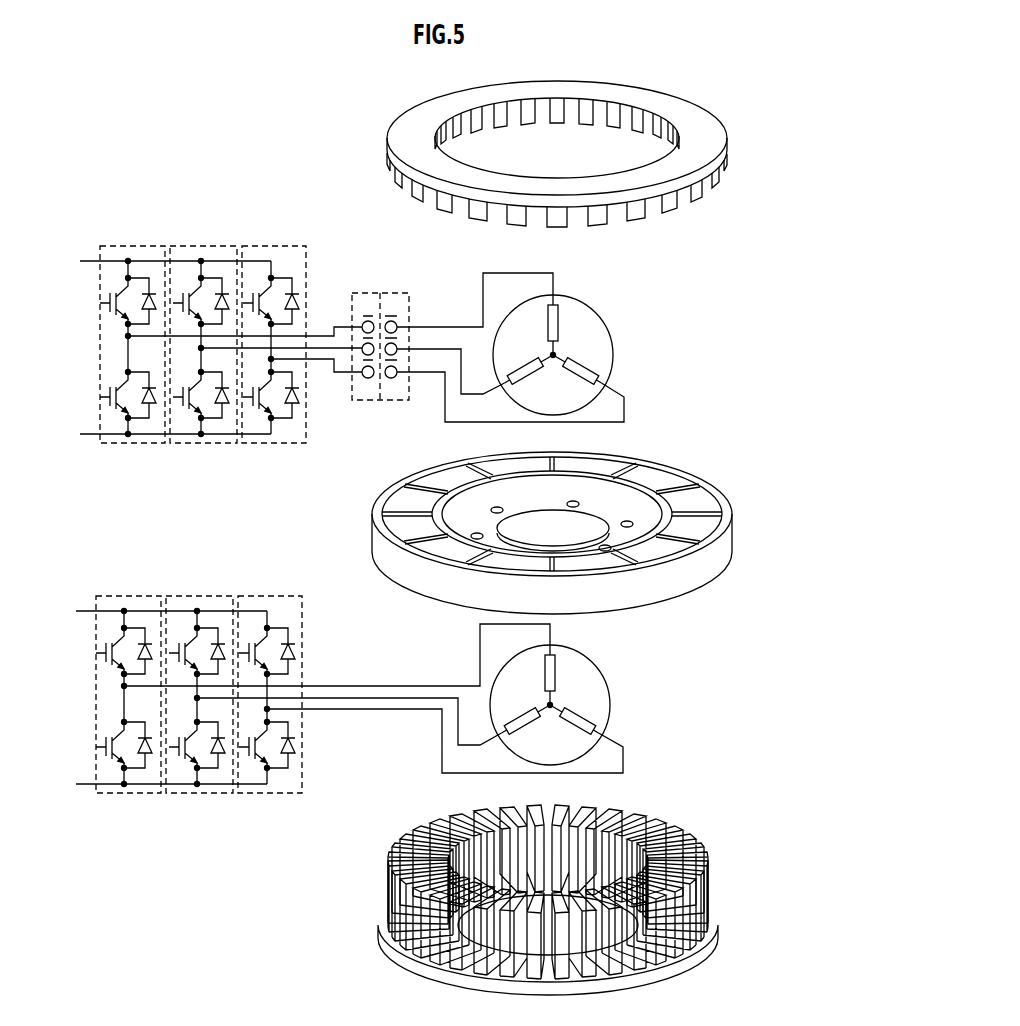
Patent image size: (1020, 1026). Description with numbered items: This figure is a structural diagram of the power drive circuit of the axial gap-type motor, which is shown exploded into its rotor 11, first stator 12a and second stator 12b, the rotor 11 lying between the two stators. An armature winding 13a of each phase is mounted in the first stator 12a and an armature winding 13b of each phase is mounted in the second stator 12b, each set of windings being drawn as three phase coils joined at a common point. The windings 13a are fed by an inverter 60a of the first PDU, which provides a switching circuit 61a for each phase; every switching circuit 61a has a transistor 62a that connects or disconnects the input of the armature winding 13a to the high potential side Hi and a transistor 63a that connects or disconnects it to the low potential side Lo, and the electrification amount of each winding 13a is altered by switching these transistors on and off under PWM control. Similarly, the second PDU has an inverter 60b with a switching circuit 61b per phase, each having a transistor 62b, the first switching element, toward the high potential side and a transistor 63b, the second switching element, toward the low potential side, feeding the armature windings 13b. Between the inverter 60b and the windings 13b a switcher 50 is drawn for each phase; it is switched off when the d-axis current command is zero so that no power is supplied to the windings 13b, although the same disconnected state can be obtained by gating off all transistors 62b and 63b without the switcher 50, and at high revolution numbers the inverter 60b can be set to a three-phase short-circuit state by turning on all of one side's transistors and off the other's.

The rotor 11 is at (679, 460).
The first stator 12a is at (671, 810).
The second stator 12b is at (645, 72).
The armature winding 13a is at (557, 667).
The armature winding 13b is at (560, 317).
The switcher 50 is at (397, 292).
The inverter 60a is at (330, 661).
The inverter 60b is at (202, 311).
The switching circuit 61a is at (128, 595).
The switching circuit 61b is at (131, 245).
The transistor 62a is at (96, 653).
The transistor 62b is at (100, 303).
The transistor 63a is at (96, 747).
The transistor 63b is at (100, 397).